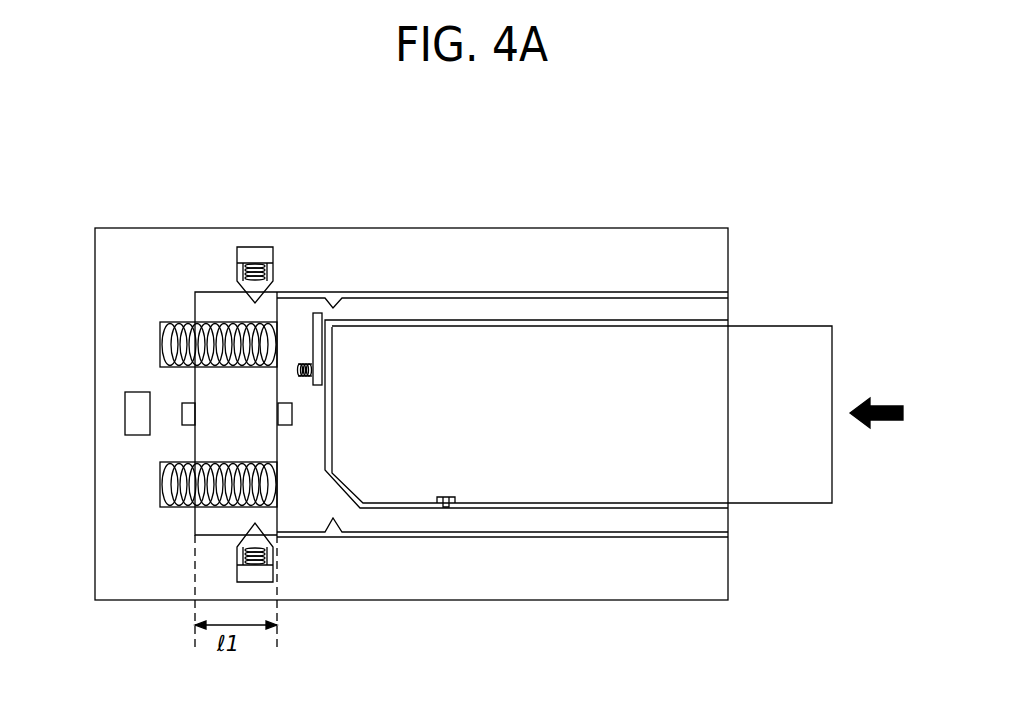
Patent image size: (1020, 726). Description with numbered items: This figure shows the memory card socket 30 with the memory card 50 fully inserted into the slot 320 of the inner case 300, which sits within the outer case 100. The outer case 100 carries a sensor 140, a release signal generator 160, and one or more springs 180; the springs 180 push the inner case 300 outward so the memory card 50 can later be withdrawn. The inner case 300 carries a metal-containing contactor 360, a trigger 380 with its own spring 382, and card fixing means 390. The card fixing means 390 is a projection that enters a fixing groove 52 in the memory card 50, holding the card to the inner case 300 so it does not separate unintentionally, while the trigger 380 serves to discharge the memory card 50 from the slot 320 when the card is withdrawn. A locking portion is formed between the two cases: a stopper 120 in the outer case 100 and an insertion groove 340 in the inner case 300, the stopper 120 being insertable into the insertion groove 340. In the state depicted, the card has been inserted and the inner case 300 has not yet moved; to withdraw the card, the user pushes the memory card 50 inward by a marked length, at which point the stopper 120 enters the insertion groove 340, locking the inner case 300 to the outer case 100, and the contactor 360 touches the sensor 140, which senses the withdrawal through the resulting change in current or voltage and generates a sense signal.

The memory card socket 30 is at (708, 126).
The memory card 50 is at (795, 338).
The fixing groove 52 is at (452, 497).
The outer case 100 is at (523, 263).
The stopper 120 is at (250, 288).
The sensor 140 is at (183, 418).
The release signal generator 160 is at (135, 422).
The spring 180 is at (177, 348).
The inner case 300 is at (698, 308).
The slot 320 is at (730, 512).
The insertion groove 340 is at (334, 307).
The contactor 360 is at (283, 413).
The trigger 380 is at (322, 338).
The spring 382 is at (298, 362).
The card fixing means 390 is at (446, 508).